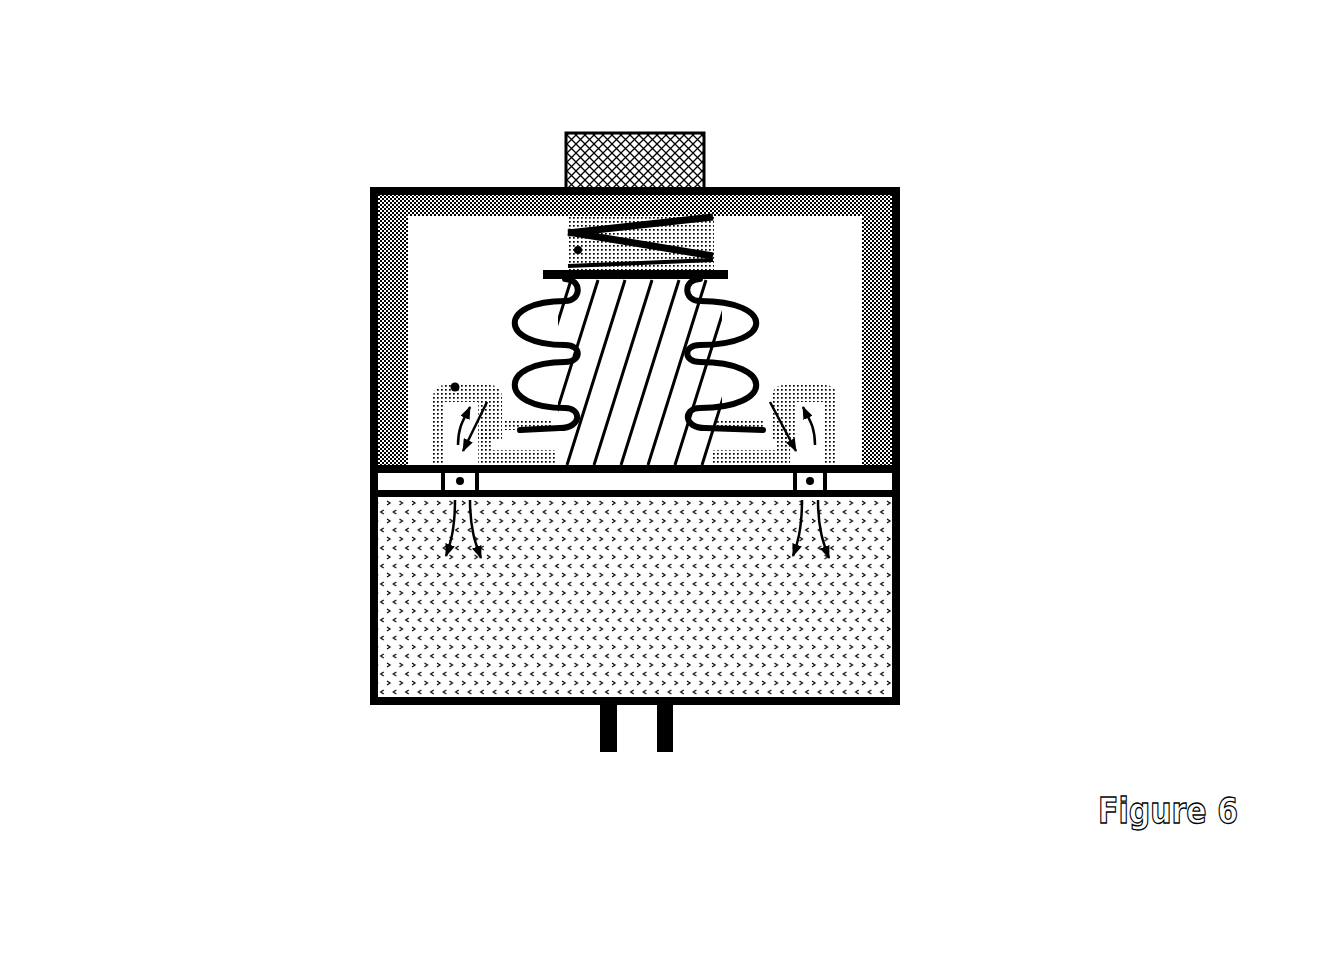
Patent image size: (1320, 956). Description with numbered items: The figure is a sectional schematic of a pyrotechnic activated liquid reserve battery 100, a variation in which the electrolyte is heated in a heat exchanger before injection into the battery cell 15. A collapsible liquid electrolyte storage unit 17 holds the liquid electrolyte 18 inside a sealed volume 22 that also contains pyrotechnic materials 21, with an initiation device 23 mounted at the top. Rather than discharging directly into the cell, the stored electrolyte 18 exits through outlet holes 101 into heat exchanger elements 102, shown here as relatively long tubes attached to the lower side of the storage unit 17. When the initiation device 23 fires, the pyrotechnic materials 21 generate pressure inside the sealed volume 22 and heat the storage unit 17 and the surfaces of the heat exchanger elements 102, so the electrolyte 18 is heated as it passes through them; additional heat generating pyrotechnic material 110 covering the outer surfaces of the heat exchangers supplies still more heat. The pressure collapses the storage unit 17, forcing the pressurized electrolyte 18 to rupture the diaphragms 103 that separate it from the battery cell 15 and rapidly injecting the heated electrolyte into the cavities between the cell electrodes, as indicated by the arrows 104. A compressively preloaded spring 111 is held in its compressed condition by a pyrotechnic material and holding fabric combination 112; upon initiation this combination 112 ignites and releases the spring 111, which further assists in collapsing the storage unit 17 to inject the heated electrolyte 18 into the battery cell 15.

The pyrotechnic activated liquid reserve battery 100 is at (1112, 137).
The battery cell 15 is at (800, 648).
The liquid electrolyte storage unit 17 is at (745, 366).
The electrolyte 18 is at (678, 357).
The pyrotechnic materials 21 is at (425, 230).
The sealed volume 22 is at (828, 350).
The initiation device 23 is at (652, 130).
The outlet holes 101 is at (423, 480).
The heat exchanger element 102 is at (440, 421).
The diaphragm 103 is at (480, 440).
The arrows 104 is at (460, 562).
The heat generating pyrotechnic material 110 is at (640, 279).
The compressively preloaded spring 111 is at (724, 254).
The pyrotechnic material and holding fabric combination 112 is at (574, 250).